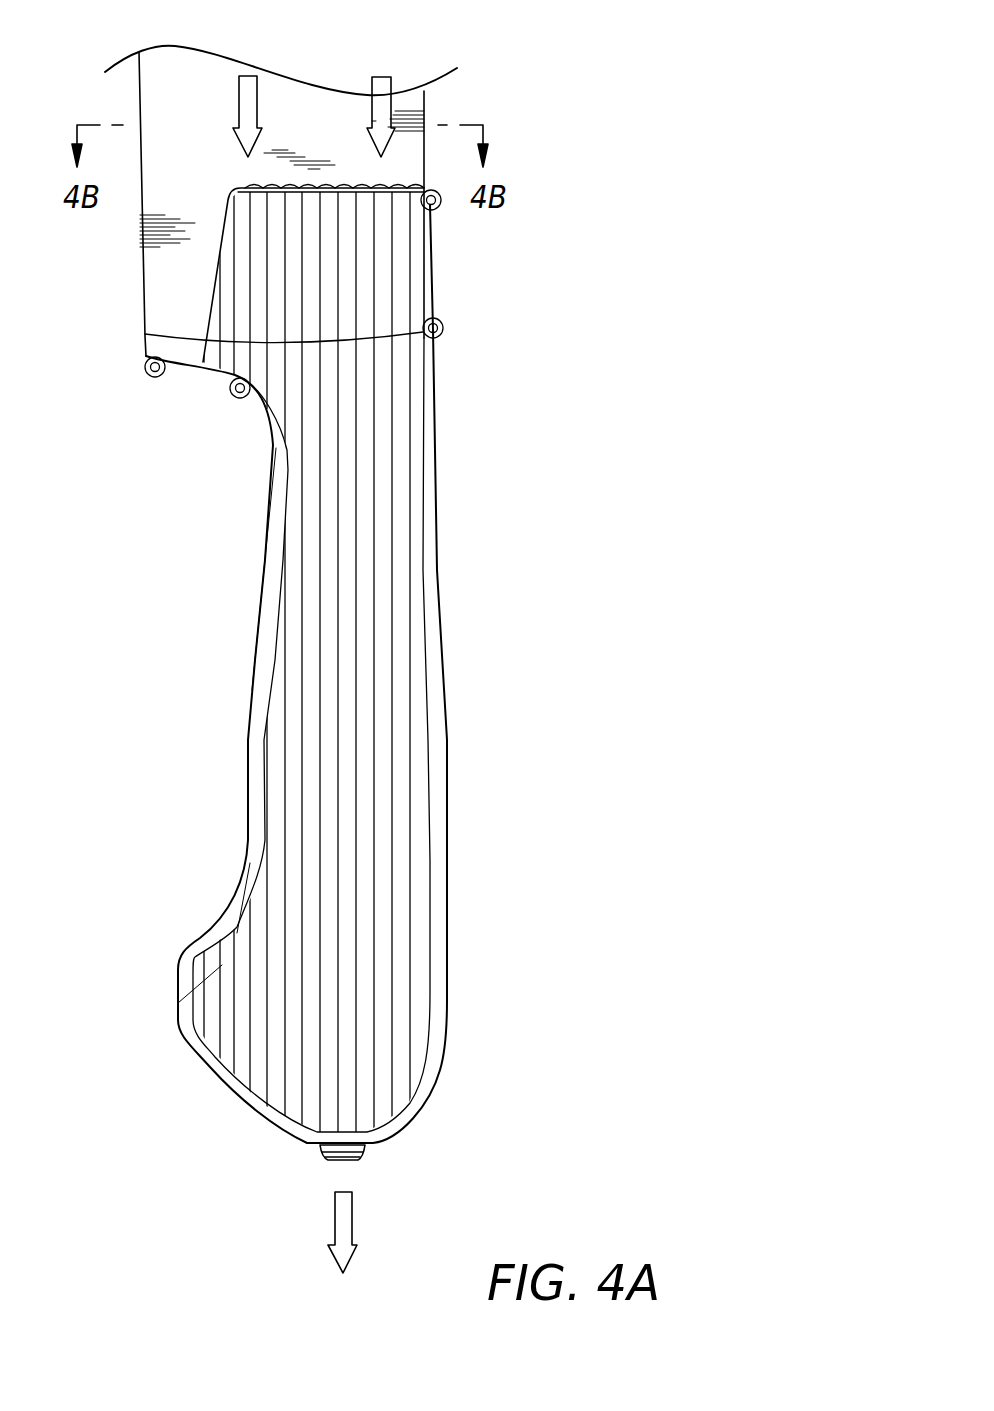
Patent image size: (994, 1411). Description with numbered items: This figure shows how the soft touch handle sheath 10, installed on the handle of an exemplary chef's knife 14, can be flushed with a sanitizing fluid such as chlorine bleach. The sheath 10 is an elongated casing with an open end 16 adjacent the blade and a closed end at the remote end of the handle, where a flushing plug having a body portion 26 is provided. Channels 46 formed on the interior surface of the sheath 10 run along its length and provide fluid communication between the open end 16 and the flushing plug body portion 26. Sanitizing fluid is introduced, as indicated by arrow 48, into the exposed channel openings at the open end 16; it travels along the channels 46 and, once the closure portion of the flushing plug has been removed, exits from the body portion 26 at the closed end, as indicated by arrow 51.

The soft touch handle sheath 10 is at (250, 352).
The chef's knife 14 is at (196, 171).
The open end 16 is at (414, 183).
The body portion 26 is at (318, 1147).
The channels 46 is at (348, 637).
The arrow 48 is at (248, 73).
The arrow 51 is at (352, 1218).